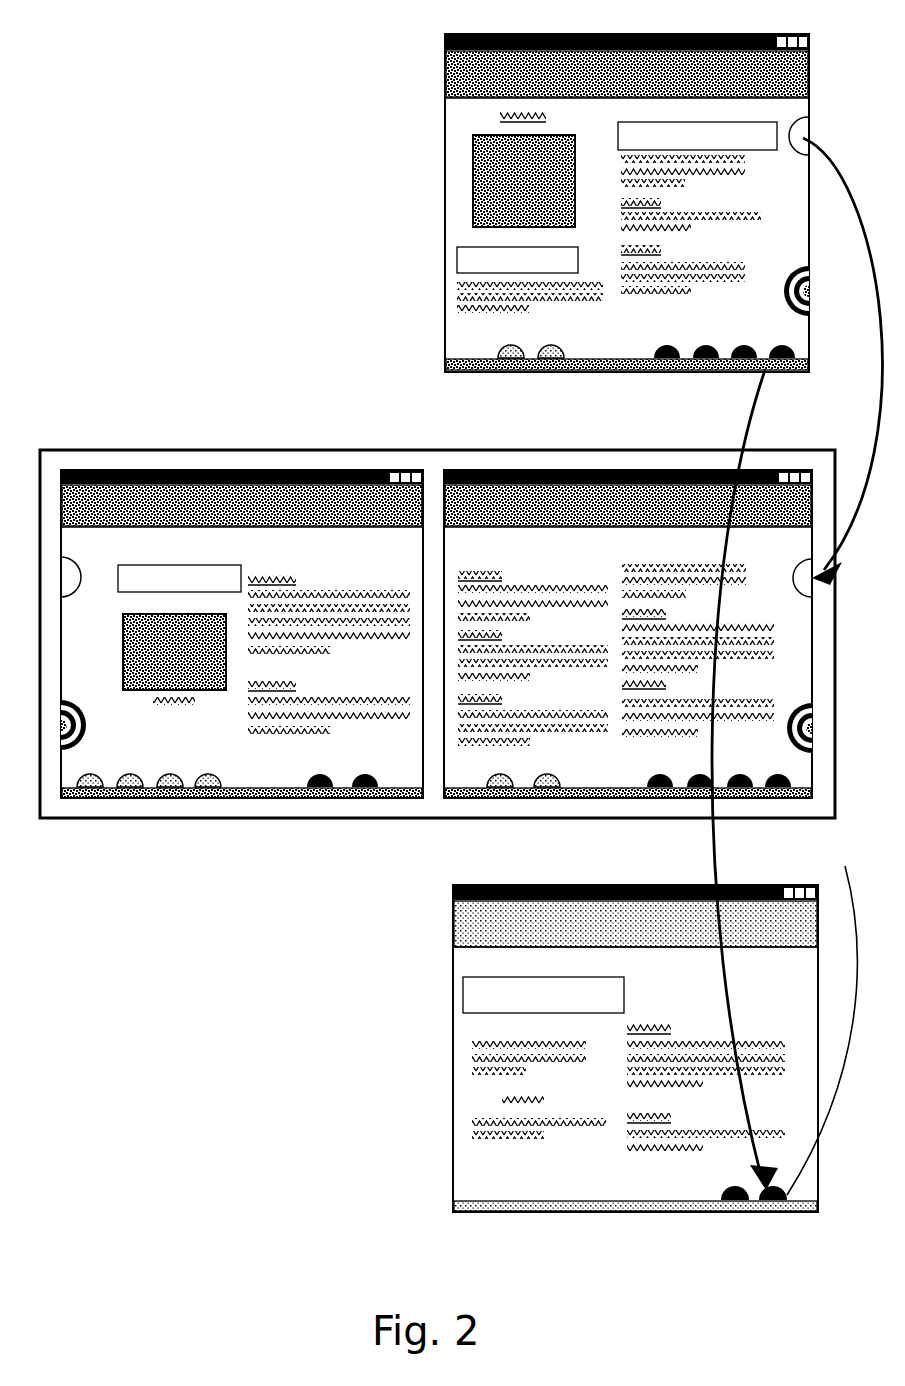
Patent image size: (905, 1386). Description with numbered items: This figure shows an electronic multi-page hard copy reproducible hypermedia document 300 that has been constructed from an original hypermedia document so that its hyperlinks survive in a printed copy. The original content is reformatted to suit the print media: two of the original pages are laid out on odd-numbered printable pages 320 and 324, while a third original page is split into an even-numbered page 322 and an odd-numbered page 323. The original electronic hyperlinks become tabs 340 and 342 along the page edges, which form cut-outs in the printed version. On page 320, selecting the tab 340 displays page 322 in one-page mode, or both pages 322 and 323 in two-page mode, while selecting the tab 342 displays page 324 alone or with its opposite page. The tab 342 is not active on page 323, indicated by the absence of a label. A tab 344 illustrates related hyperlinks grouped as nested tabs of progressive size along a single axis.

The electronic multi-page hard copy reproducible hypermedia document 300 is at (146, 96).
The odd-numbered printable page 320 is at (592, 210).
The even-numbered page 322 is at (258, 772).
The odd-numbered page 323 is at (447, 780).
The odd-numbered printable page 324 is at (467, 1168).
The tab 340 is at (803, 138).
The tab 342 is at (797, 372).
The nested tab 344 is at (785, 300).